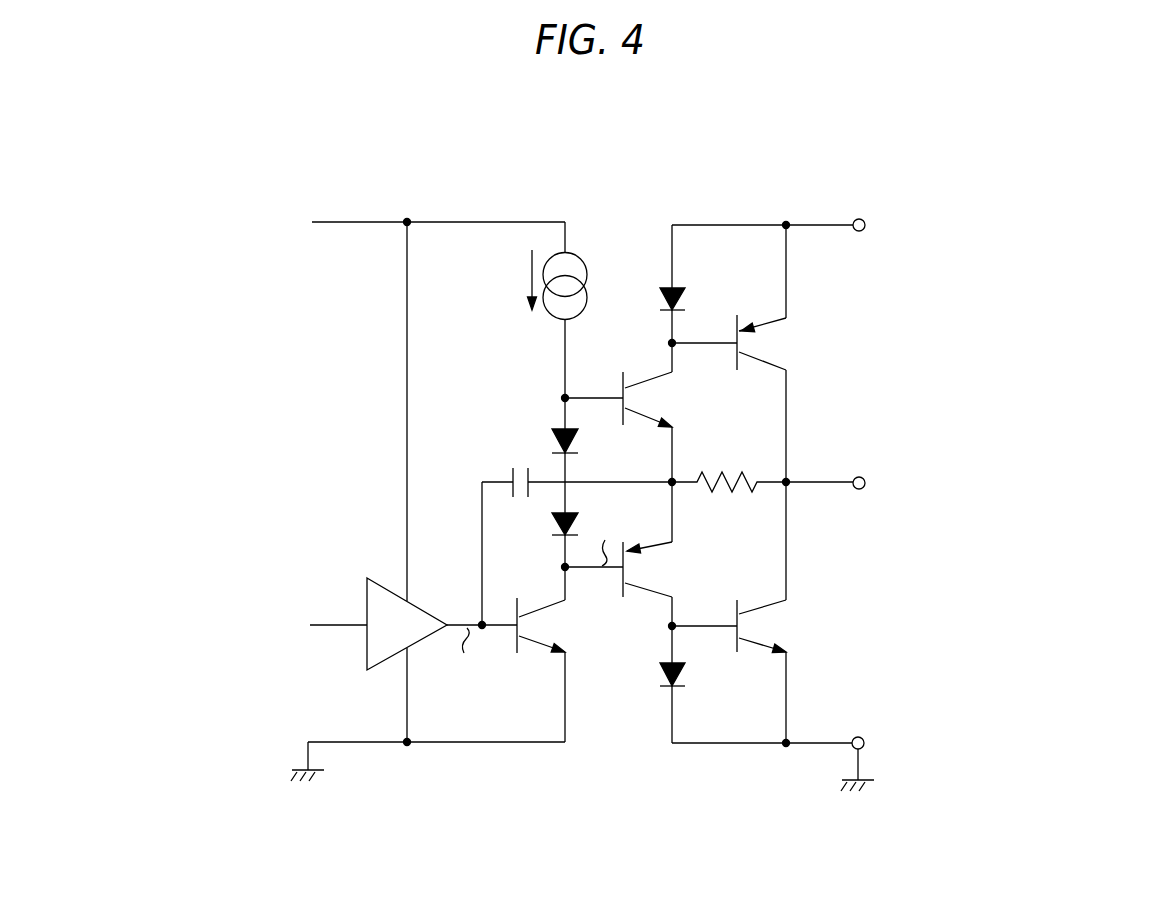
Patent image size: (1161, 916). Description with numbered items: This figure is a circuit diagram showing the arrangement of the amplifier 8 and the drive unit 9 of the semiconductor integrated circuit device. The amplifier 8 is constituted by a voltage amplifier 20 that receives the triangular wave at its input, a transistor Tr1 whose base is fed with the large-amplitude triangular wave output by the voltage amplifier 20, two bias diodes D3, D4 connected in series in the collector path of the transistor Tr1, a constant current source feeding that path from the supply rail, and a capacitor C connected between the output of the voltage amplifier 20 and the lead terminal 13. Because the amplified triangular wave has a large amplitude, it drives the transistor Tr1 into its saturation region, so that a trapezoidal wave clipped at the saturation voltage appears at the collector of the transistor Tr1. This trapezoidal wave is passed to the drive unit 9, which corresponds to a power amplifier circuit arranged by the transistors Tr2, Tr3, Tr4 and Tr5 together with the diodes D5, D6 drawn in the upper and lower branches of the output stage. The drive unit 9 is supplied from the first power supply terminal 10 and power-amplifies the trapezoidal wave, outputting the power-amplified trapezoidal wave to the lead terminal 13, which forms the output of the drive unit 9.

The amplifier 8 is at (592, 153).
The drive unit 9 is at (892, 153).
The first power supply terminal 10 is at (859, 219).
The lead terminal 13 is at (859, 477).
The voltage amplifier 20 is at (428, 613).
The transistor Tr1 is at (548, 643).
The transistor Tr2 is at (653, 412).
The transistor Tr3 is at (652, 583).
The transistor Tr4 is at (757, 359).
The transistor Tr5 is at (764, 639).
The bias diode D3 is at (552, 446).
The bias diode D4 is at (552, 531).
The diode D5 is at (661, 305).
The diode D6 is at (659, 680).
The capacitor C is at (510, 470).